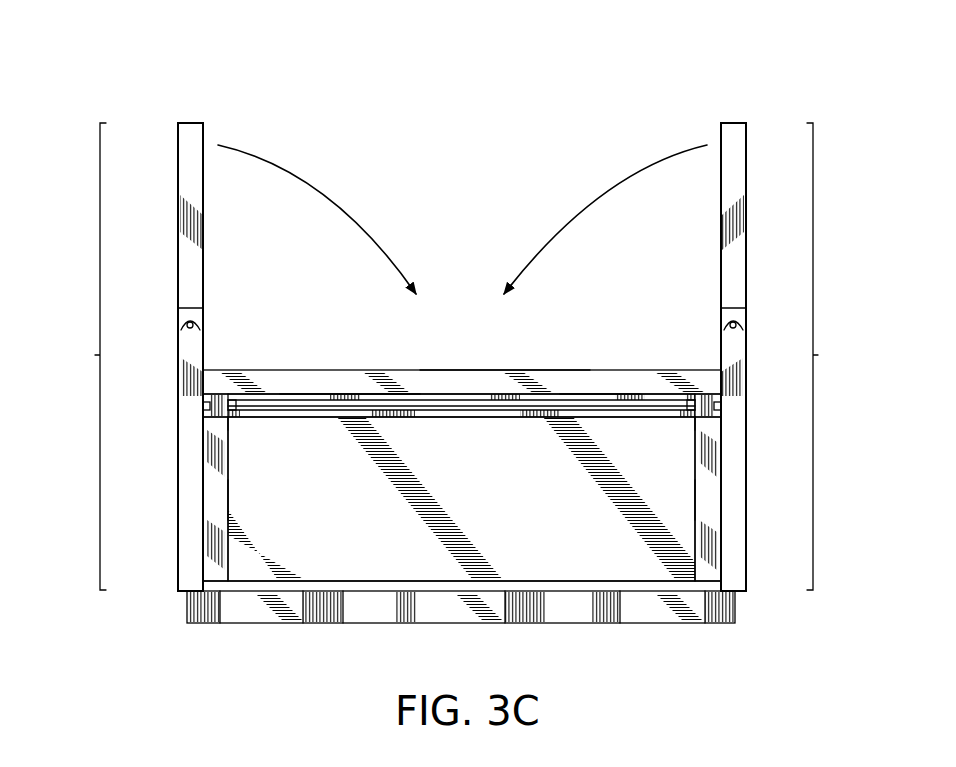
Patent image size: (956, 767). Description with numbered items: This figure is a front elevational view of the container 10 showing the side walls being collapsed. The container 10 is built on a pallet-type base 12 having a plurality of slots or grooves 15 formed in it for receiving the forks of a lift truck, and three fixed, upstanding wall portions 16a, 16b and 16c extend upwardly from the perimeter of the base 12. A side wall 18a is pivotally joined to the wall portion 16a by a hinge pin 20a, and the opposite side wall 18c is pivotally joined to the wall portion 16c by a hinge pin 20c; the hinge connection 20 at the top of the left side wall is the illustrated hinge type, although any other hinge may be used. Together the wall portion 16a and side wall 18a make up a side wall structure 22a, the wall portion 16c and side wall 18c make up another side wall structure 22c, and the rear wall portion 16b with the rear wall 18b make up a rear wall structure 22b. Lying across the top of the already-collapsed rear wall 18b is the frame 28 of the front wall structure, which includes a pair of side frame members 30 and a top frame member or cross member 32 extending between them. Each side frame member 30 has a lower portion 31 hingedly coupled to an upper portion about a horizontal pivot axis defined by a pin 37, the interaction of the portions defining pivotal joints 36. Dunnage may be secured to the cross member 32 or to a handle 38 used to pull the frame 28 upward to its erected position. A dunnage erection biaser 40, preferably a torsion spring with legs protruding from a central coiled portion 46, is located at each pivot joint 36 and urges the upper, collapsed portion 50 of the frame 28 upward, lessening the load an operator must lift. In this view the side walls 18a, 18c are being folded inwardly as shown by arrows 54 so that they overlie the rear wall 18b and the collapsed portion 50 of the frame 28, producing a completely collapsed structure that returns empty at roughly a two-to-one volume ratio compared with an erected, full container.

The container 10 is at (201, 48).
The base 12 is at (461, 629).
The slots or grooves 15 is at (364, 623).
The wall portion 16a is at (178, 468).
The rear wall portion 16b is at (462, 499).
The wall portion 16c is at (746, 470).
The side wall 18a is at (178, 158).
The rear wall 18b is at (449, 370).
The side wall 18c is at (746, 180).
The hinge 20 is at (170, 112).
The hinge pin 20a is at (187, 325).
The hinge pin 20c is at (736, 325).
The side wall structure 22a is at (100, 207).
The rear wall structure 22b is at (504, 368).
The side wall structure 22c is at (813, 207).
The frame 28 is at (579, 391).
The side frame members 30 is at (230, 506).
The lower portion 31 is at (262, 552).
The top frame member 32 is at (323, 417).
The pivotal joints 36 is at (230, 423).
The pin 37 is at (238, 406).
The handle 38 is at (441, 417).
The dunnage erection biaser 40 is at (206, 400).
The central coiled portion 46 is at (206, 410).
The collapsed portion 50 is at (344, 390).
The arrows 54 is at (347, 197).